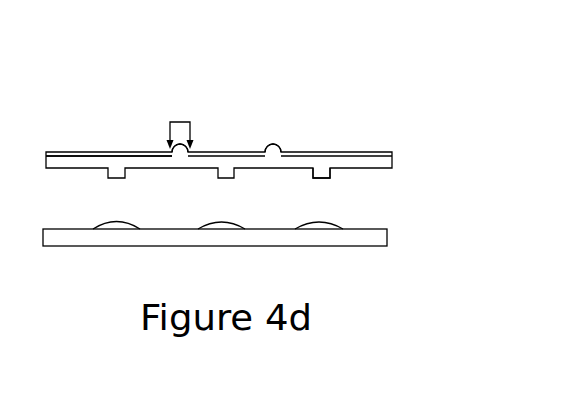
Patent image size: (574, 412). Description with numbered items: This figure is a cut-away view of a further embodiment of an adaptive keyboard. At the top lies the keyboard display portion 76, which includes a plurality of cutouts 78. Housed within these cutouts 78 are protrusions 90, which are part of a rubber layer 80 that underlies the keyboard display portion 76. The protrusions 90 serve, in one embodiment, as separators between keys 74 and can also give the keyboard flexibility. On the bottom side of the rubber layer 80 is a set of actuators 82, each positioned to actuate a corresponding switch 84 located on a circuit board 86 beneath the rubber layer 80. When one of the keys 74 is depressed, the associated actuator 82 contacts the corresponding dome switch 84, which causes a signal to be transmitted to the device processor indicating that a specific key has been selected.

The key 74 is at (308, 155).
The keyboard display portion 76 is at (91, 156).
The cutout 78 is at (176, 122).
The rubber layer 80 is at (353, 160).
The actuator 82 is at (320, 170).
The switch 84 is at (228, 224).
The circuit board 86 is at (109, 237).
The protrusion 90 is at (268, 150).